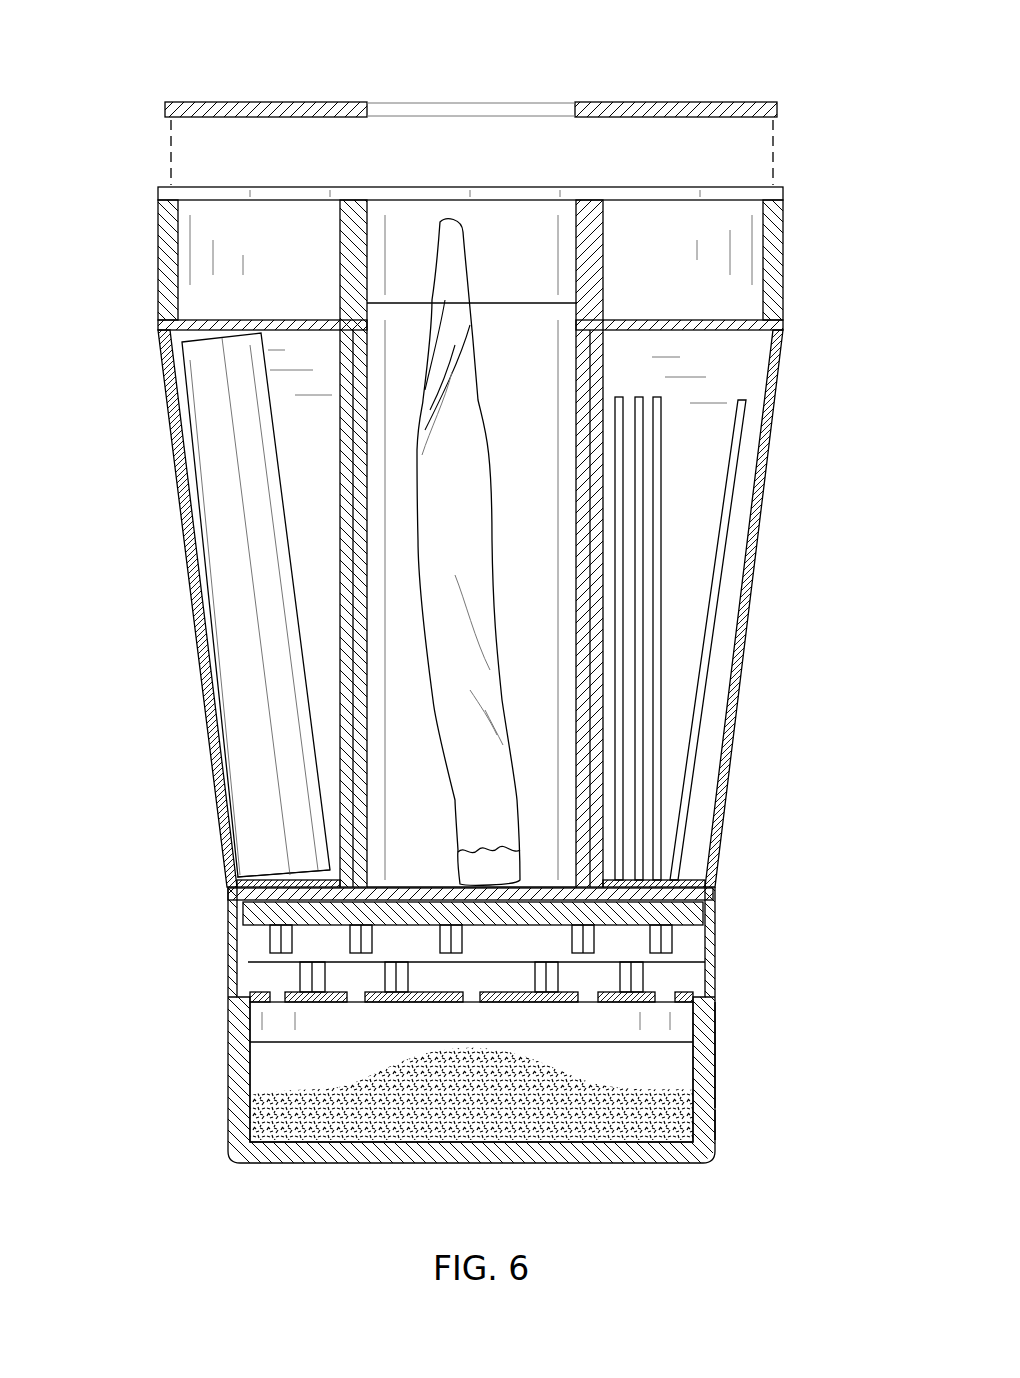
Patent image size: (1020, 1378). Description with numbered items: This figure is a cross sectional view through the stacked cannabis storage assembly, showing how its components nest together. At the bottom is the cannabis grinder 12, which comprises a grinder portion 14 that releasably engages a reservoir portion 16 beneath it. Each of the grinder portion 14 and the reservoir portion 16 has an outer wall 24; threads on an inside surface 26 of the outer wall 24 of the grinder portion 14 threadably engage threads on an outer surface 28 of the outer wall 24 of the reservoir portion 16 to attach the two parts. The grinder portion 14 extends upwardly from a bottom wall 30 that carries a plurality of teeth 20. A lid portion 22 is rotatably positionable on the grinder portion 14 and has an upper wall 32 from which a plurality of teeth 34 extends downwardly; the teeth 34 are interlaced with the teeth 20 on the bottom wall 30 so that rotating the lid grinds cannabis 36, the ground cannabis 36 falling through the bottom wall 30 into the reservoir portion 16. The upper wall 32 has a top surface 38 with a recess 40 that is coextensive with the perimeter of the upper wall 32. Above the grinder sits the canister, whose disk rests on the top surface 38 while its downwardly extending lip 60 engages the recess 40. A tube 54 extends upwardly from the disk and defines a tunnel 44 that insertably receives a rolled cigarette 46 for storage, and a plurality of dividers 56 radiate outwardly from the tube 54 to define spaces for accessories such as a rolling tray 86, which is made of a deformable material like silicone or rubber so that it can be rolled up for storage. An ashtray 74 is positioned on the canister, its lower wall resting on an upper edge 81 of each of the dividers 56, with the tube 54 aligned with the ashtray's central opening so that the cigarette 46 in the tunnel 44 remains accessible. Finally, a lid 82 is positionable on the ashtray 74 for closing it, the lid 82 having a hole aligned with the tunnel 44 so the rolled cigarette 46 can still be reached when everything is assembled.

The cannabis grinder 12 is at (735, 1065).
The grinder portion 14 is at (220, 1018).
The reservoir portion 16 is at (220, 1128).
The plurality of teeth 20 is at (228, 997).
The lid portion 22 is at (725, 917).
The outer wall 24 is at (715, 1038).
The inside surface 26 is at (693, 1022).
The outer surface 28 is at (715, 1097).
The bottom wall 30 is at (397, 1003).
The upper wall 32 is at (270, 898).
The plurality of teeth 34 is at (690, 885).
The cannabis 36 is at (296, 1107).
The top surface 38 is at (293, 898).
The recess 40 is at (220, 902).
The tunnel 44 is at (396, 258).
The rolled cigarette 46 is at (467, 335).
The tube 54 is at (603, 717).
The plurality of dividers 56 is at (338, 568).
The lip 60 is at (715, 950).
The ashtray 74 is at (158, 258).
The upper edge 81 is at (783, 304).
The lid 82 is at (725, 100).
The rolling tray 86 is at (203, 410).